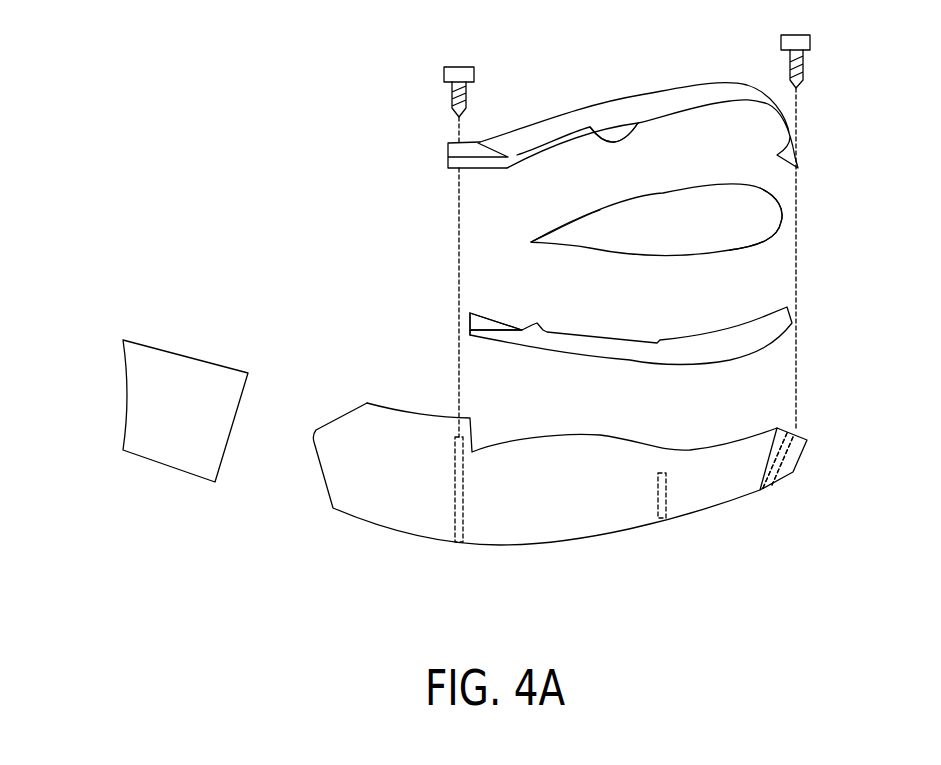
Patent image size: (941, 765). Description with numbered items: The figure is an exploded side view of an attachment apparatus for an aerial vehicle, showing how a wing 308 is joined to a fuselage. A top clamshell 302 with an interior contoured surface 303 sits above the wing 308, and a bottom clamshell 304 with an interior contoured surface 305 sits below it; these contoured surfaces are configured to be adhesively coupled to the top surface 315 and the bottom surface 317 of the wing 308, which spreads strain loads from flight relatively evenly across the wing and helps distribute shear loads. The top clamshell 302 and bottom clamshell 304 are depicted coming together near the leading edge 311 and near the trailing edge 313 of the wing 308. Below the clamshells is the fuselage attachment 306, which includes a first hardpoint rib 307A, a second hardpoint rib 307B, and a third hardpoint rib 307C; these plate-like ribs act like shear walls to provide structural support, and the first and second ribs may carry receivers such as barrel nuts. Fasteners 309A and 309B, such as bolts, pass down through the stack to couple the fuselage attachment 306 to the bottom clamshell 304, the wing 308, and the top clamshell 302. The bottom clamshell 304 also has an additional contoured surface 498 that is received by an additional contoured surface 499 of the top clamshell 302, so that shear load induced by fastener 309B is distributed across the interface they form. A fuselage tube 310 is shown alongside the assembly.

The top clamshell 302 is at (768, 108).
The contoured surface 303 is at (600, 136).
The bottom clamshell 304 is at (793, 323).
The contoured surface 305 is at (705, 331).
The fuselage attachment 306 is at (797, 460).
The first hardpoint rib 307A is at (793, 472).
The second hardpoint rib 307B is at (463, 500).
The third hardpoint rib 307C is at (667, 487).
The wing 308 is at (663, 193).
The fastener 309A is at (810, 42).
The fastener 309B is at (443, 75).
The fuselage tube 310 is at (195, 378).
The leading edge 311 is at (785, 218).
The trailing edge 313 is at (532, 240).
The top surface 315 is at (763, 186).
The bottom surface 317 is at (643, 267).
The additional contoured surface 498 is at (470, 315).
The additional contoured surface 499 is at (460, 150).